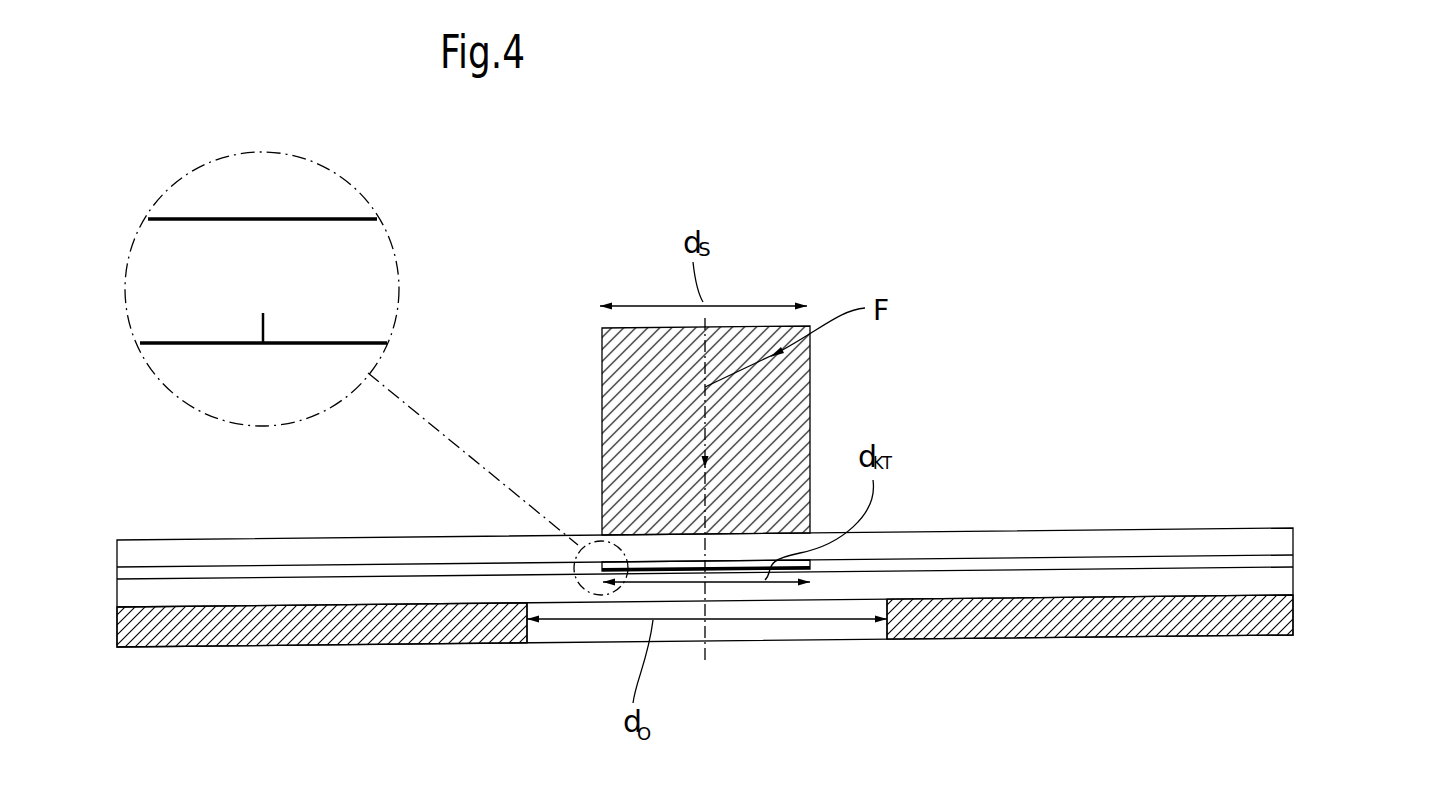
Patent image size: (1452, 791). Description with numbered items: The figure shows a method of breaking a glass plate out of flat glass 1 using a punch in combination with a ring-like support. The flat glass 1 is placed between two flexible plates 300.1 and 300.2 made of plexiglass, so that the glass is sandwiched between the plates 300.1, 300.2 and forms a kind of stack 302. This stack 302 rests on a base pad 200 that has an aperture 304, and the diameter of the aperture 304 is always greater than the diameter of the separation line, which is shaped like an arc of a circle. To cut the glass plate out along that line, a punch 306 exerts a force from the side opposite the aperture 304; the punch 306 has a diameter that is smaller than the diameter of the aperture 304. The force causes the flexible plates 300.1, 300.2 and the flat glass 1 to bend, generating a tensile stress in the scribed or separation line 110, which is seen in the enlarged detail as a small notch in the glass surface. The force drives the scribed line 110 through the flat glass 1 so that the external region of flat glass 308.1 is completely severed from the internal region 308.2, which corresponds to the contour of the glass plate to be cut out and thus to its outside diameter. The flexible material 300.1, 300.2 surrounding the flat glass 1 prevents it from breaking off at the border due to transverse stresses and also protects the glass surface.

The flat glass 1 is at (373, 236).
The scribed or separation line 110 is at (270, 328).
The base pad 200 is at (1137, 623).
The flexible plate 300.1 is at (923, 588).
The flexible plate 300.2 is at (1280, 582).
The stack 302 is at (1225, 485).
The aperture 304 is at (707, 676).
The punch 306 is at (782, 408).
The external region of flat glass 308.1 is at (1055, 558).
The internal region 308.2 is at (643, 563).